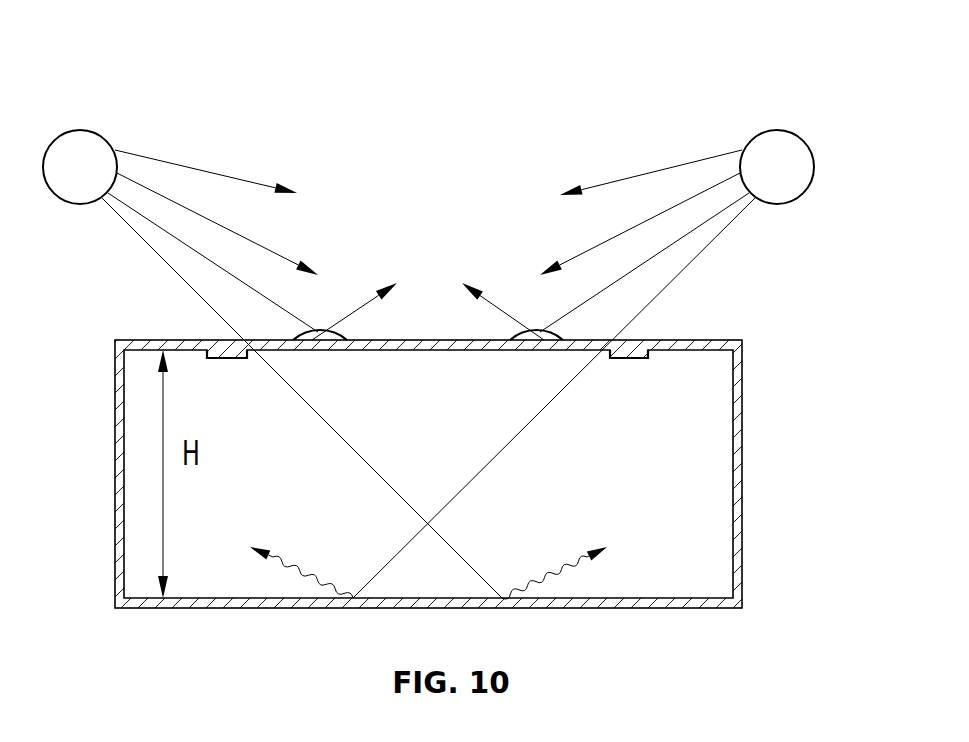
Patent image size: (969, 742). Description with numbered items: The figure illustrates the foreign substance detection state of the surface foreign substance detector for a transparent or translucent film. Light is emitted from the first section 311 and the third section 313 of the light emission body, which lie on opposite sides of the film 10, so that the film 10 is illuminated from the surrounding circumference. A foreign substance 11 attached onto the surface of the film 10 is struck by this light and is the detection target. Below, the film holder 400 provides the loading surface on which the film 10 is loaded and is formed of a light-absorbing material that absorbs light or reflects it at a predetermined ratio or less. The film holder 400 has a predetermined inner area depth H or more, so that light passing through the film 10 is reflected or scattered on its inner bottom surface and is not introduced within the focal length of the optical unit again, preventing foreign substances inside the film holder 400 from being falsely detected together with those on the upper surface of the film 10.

The first section 311 is at (78, 143).
The third section 313 is at (780, 140).
The foreign substance 11 is at (331, 336).
The film 10 is at (530, 337).
The film holder 400 is at (740, 443).